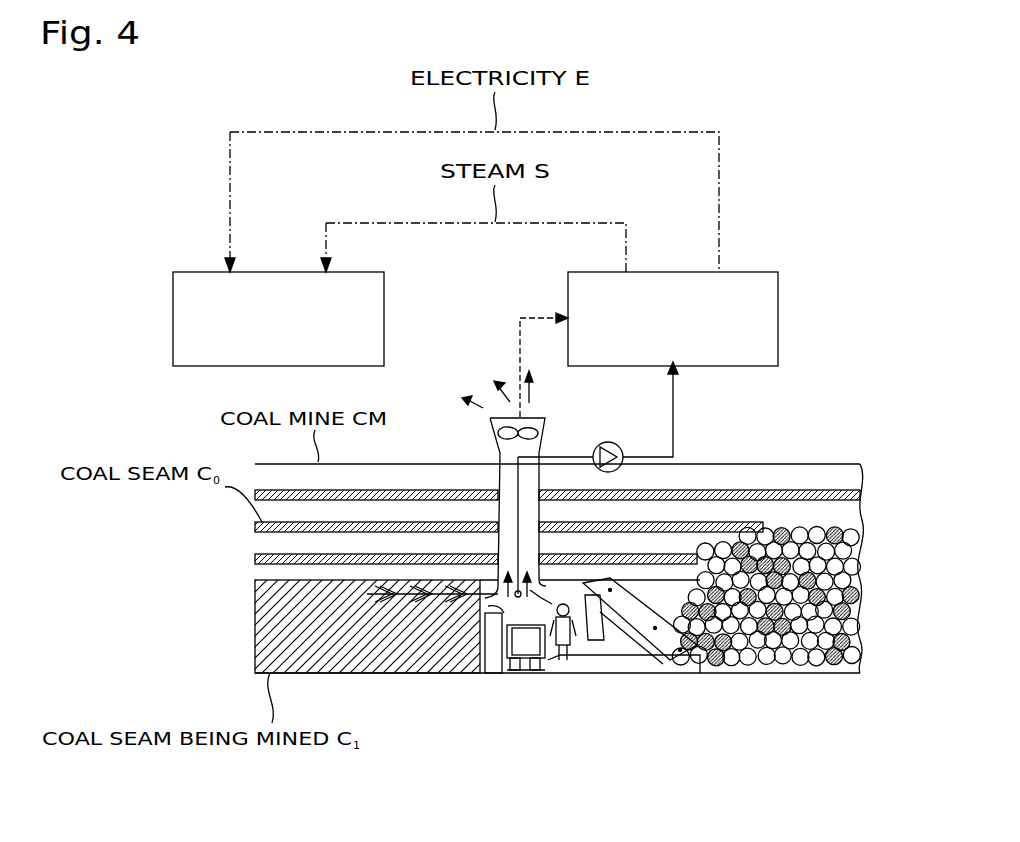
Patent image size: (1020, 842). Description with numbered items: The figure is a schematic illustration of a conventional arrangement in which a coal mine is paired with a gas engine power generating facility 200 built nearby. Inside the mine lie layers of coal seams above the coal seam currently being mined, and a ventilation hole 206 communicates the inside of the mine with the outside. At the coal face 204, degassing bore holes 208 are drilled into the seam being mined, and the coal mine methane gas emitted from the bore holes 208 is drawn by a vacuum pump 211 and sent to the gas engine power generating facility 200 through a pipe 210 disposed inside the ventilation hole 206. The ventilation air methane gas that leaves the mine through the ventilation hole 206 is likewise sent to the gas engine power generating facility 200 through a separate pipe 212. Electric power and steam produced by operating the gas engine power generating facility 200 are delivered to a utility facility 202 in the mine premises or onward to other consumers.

The gas engine power generating facility 200 is at (780, 300).
The utility facility 202 is at (386, 296).
The coal face 204 is at (550, 673).
The ventilation hole 206 is at (490, 445).
The degassing bore holes 208 is at (463, 600).
The pipe 210 is at (674, 413).
The vacuum pump 211 is at (608, 442).
The pipe 212 is at (535, 316).